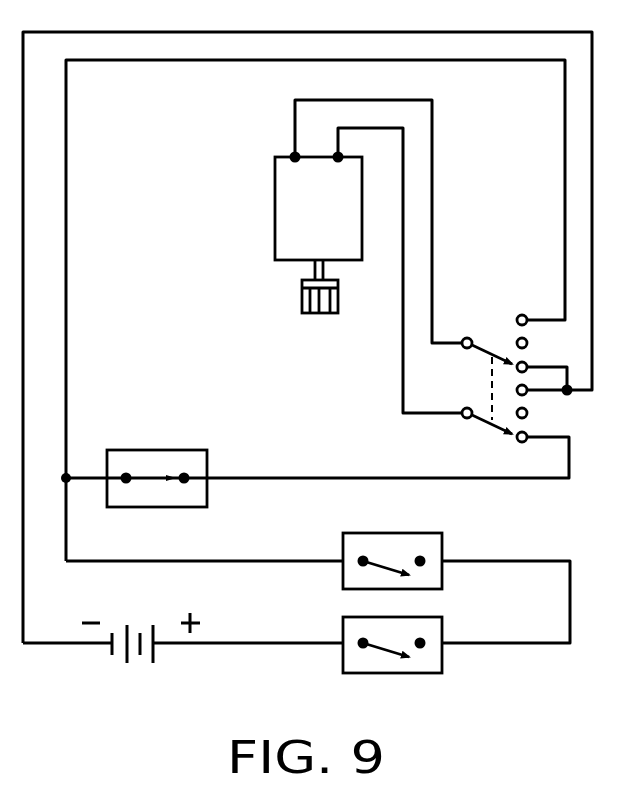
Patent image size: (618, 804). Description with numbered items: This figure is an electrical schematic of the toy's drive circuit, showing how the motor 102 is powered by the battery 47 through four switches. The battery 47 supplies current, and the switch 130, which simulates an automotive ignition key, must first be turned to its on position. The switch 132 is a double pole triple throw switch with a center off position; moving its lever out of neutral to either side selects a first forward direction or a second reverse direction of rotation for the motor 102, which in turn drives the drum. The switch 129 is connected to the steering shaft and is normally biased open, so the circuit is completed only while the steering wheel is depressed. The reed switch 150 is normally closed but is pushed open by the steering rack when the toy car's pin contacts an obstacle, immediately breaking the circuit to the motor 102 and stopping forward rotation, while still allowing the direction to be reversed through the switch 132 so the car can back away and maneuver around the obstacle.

The motor 102 is at (275, 233).
The switch 132 is at (500, 328).
The reed switch 150 is at (185, 450).
The electrical switch 129 is at (420, 533).
The switch 130 is at (425, 617).
The battery 47 is at (138, 623).